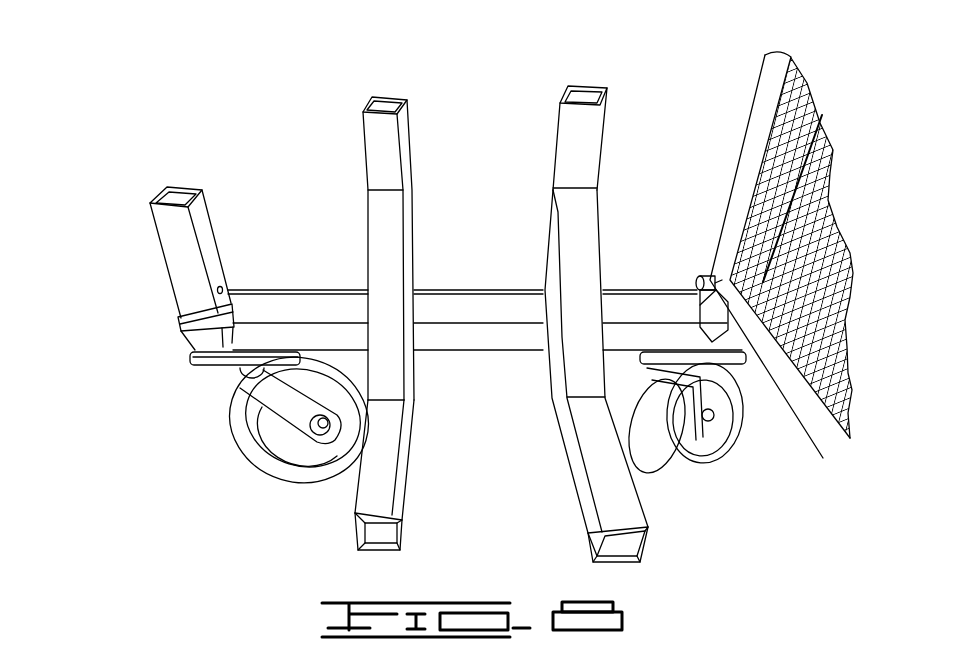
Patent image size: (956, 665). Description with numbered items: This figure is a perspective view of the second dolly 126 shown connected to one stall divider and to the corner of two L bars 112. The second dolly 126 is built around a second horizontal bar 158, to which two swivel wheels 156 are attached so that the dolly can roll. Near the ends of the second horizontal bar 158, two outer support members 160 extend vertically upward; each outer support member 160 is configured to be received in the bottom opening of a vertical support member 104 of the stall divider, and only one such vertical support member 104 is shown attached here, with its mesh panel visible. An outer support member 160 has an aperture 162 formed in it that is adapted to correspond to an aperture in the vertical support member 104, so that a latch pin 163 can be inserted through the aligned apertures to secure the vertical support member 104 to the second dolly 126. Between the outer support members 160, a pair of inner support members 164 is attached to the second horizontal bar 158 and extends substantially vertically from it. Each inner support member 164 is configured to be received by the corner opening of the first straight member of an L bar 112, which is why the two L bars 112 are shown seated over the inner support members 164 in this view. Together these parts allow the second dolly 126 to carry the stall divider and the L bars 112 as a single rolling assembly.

The second dolly 126 is at (145, 63).
The vertical support member 104 is at (748, 112).
The L bar 112 is at (408, 456).
The swivel wheel 156 is at (248, 468).
The second horizontal bar 158 is at (483, 334).
The outer support member 160 is at (165, 257).
The aperture 162 is at (222, 288).
The latch pin 163 is at (697, 283).
The inner support member 164 is at (363, 137).